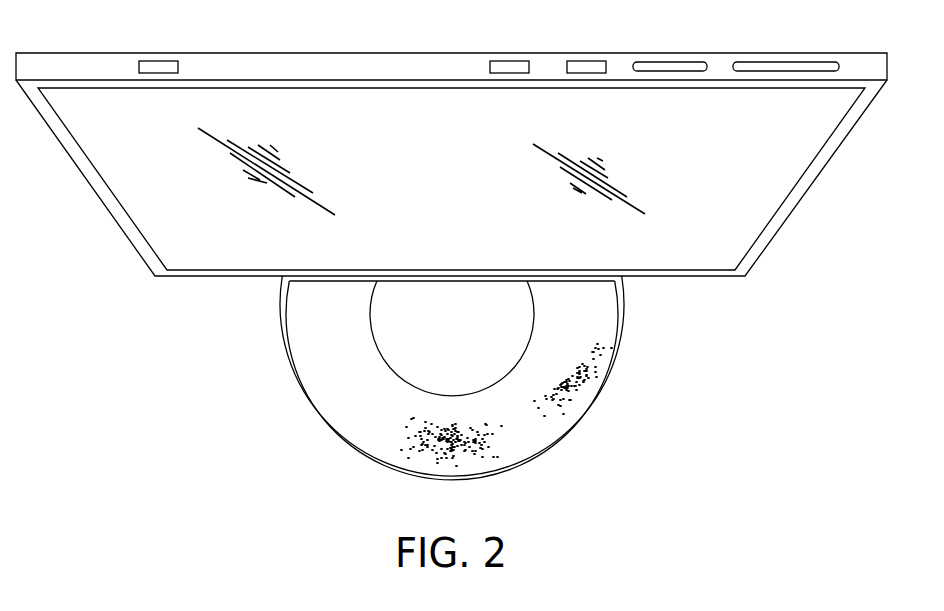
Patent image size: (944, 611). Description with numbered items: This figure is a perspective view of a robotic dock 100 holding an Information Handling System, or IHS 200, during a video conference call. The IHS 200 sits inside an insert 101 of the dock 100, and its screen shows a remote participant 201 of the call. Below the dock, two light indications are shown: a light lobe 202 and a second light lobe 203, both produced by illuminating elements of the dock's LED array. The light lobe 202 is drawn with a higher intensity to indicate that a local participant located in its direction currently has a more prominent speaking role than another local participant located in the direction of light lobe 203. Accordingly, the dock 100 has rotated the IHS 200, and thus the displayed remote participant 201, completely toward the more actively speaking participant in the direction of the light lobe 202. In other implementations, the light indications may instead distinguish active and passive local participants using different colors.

The Information Handling System (IHS) 200 is at (451, 167).
The remote participant 201 is at (668, 257).
The robotic dock 100 is at (452, 378).
The insert 101 is at (351, 283).
The light lobe 202 is at (411, 465).
The light lobe 203 is at (594, 411).